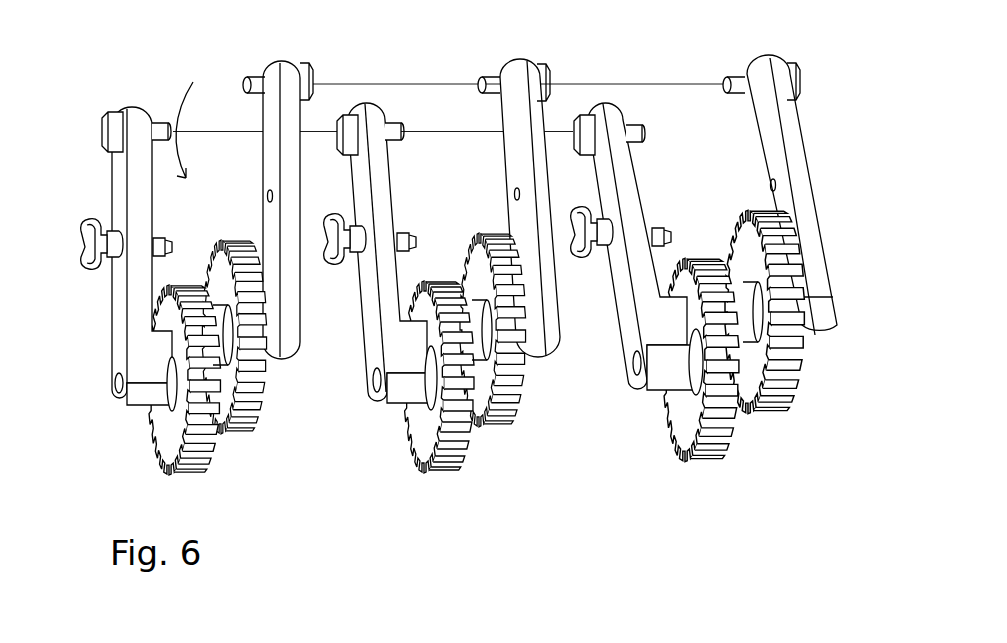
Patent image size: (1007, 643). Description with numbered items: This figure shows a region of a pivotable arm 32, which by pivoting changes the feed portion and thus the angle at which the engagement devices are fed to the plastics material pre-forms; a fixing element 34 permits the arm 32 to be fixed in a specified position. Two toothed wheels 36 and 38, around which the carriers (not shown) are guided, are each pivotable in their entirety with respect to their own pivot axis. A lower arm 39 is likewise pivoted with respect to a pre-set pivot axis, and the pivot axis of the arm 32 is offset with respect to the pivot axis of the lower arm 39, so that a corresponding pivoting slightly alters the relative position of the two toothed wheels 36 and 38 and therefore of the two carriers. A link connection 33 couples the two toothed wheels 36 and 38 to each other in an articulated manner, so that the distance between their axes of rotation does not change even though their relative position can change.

The pivotable arm 32 is at (115, 338).
The link connection 33 is at (478, 354).
The clamp 34 is at (85, 225).
The toothed wheel 36 is at (152, 447).
The toothed wheel 38 is at (231, 403).
The lower arm 39 is at (287, 167).